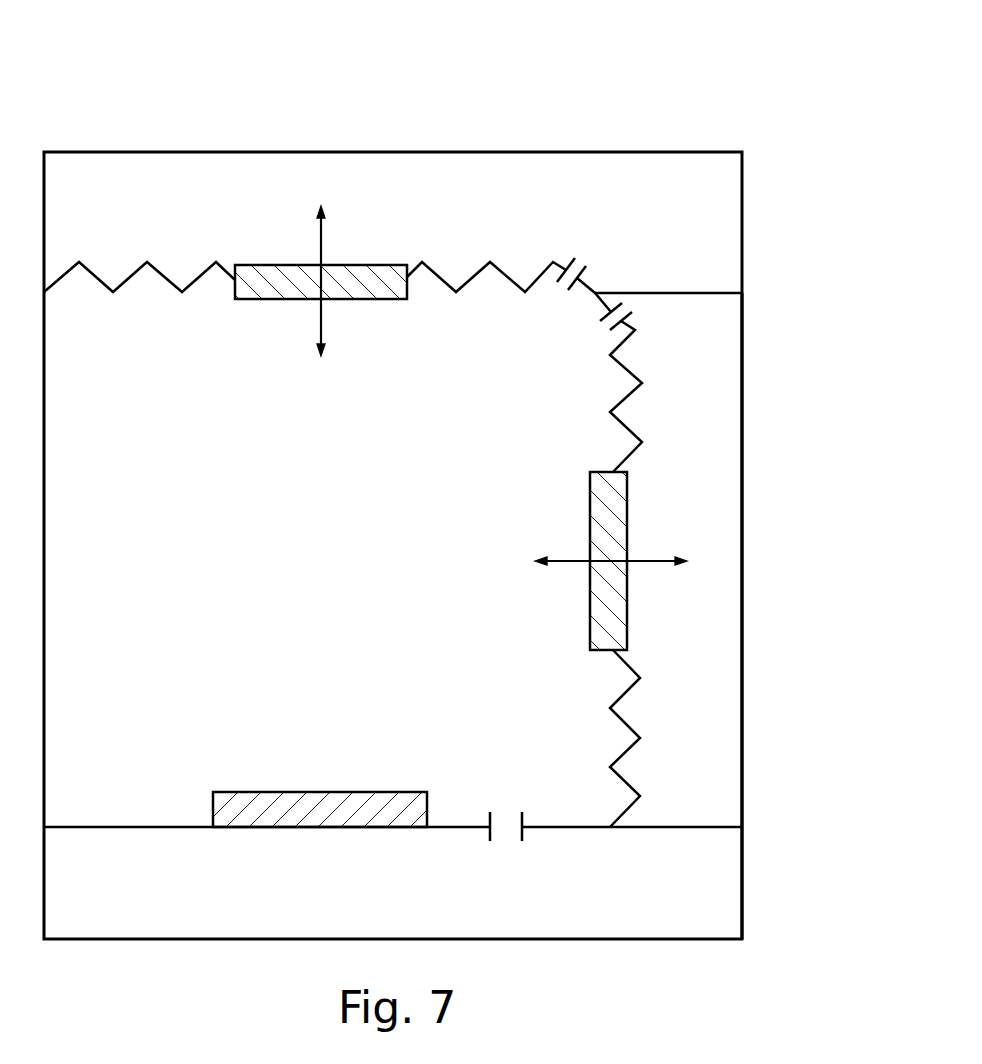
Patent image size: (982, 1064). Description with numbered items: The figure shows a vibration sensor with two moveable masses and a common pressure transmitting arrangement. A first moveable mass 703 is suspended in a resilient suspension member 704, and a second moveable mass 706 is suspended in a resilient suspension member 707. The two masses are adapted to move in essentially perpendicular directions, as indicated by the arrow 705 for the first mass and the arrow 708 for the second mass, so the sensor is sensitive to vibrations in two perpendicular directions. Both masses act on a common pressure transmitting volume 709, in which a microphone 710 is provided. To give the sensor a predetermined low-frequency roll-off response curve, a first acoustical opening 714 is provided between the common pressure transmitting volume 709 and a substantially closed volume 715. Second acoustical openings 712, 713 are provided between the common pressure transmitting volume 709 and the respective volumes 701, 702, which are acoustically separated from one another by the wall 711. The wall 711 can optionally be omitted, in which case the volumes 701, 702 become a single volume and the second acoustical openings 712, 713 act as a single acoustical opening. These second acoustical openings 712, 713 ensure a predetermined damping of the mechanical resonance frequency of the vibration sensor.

The volume 701 is at (725, 205).
The volume 702 is at (727, 430).
The moveable mass 703 is at (370, 272).
The resilient suspension member 704 is at (628, 118).
The arrow 705 is at (320, 322).
The moveable mass 706 is at (600, 583).
The resilient suspension member 707 is at (618, 725).
The arrow 708 is at (567, 558).
The common pressure transmitting volume 709 is at (117, 813).
The microphone 710 is at (337, 813).
The wall 711 is at (727, 296).
The second acoustical opening 712 is at (628, 302).
The second acoustical opening 713 is at (580, 262).
The first acoustical opening 714 is at (508, 830).
The substantially closed volume 715 is at (730, 893).